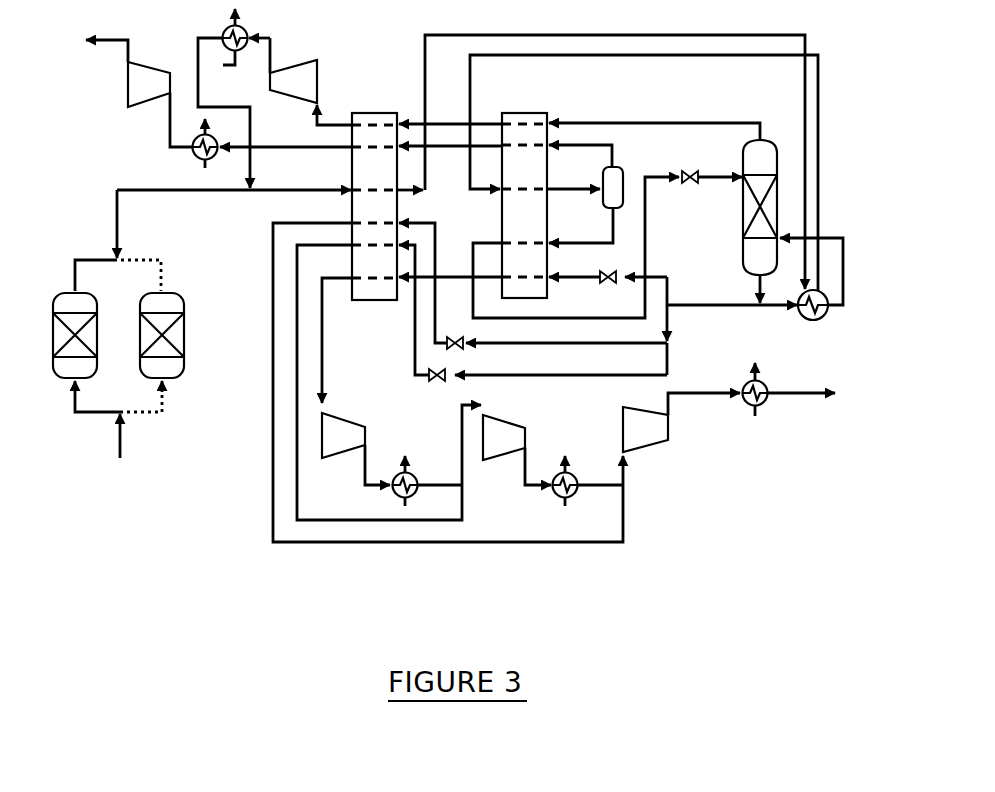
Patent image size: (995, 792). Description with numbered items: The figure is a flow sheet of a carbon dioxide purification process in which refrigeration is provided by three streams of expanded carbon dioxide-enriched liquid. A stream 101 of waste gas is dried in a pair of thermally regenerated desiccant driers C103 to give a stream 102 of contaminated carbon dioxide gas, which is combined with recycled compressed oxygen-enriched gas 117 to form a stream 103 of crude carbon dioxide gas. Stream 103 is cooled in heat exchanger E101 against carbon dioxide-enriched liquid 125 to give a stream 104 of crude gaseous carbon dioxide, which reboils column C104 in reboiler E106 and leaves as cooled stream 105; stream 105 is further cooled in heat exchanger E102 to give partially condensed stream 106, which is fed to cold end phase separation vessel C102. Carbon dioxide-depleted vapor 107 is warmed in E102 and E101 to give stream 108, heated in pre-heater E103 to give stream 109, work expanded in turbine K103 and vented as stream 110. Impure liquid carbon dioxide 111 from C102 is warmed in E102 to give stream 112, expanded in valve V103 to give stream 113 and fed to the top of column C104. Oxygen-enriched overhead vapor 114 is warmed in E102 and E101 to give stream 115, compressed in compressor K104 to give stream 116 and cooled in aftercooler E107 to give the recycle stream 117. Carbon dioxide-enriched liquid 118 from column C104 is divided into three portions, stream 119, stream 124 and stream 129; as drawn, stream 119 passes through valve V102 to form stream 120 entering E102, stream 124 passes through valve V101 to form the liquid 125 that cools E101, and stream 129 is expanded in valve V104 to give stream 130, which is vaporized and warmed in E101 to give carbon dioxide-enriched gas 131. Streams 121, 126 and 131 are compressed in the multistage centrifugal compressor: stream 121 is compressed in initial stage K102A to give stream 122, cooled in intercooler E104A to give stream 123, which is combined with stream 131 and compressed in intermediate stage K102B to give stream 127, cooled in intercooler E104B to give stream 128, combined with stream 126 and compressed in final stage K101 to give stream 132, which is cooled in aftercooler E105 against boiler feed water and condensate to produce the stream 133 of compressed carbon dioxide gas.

The stream of waste gas 101 is at (120, 428).
The stream of contaminated carbon dioxide gas 102 is at (211, 200).
The stream of crude carbon dioxide gas 103 is at (316, 188).
The stream of crude gaseous carbon dioxide 104 is at (495, 34).
The stream of cooled crude carbon dioxide gas 105 is at (526, 60).
The stream of partially condensed crude carbon dioxide gas 106 is at (593, 187).
The stream of carbon dioxide-depleted vapor 107 is at (612, 140).
The stream of carbon dioxide-depleted gas 108 is at (285, 146).
The stream of heated carbon dioxide-depleted gas 109 is at (171, 144).
The stream of expanded carbon dioxide depleted gas 110 is at (117, 38).
The stream of impure carbon dioxide liquid 111 is at (600, 240).
The stream of warmed impure carbon dioxide liquid 112 is at (472, 256).
The stream of expanded impure carbon dioxide liquid 113 is at (713, 173).
The stream of oxygen-enriched overhead vapor 114 is at (656, 122).
The stream of warmed oxygen-enriched gas 115 is at (334, 122).
The stream of compressed oxygen-enriched gas 116 is at (276, 47).
The stream of compressed oxygen-enriched gas 117 is at (212, 38).
The stream of carbon dioxide-enriched liquid 118 is at (745, 308).
The stream of carbon dioxide-enriched liquid 119 is at (676, 287).
The stream from V102 120 is at (593, 274).
The stream of carbon dioxide-enriched gas 121 is at (324, 327).
The stream of compressed carbon dioxide gas 122 is at (362, 459).
The stream of cooled compressed carbon dioxide gas 123 is at (440, 483).
The stream of carbon dioxide-enriched liquid 124 is at (616, 345).
The stream of carbon dioxide-enriched liquid 125 is at (437, 232).
The stream of carbon dioxide-enriched gas 126 is at (270, 258).
The stream of further compressed carbon dioxide gas 127 is at (522, 461).
The stream of further compressed carbon dioxide gas 128 is at (598, 483).
The stream of carbon dioxide-enriched liquid 129 is at (605, 378).
The stream of expanded carbon dioxide-enriched liquid 130 is at (414, 311).
The stream of carbon dioxide-enriched gas 131 is at (297, 287).
The stream of compressed carbon dioxide gas 132 is at (711, 391).
The stream of compressed carbon dioxide gas 133 is at (799, 391).
The cold end phase separation vessel C102 is at (624, 186).
The thermally regenerated desiccant driers C103 is at (185, 371).
The column C104 is at (742, 207).
The heat exchanger E101 is at (374, 195).
The heat exchanger E102 is at (504, 112).
The pre-heater E103 is at (199, 161).
The intercooler E104A is at (398, 499).
The intercooler E104B is at (556, 501).
The aftercooler E105 is at (750, 405).
The reboiler E106 is at (811, 320).
The aftercooler E107 is at (243, 28).
The final compressor stage K101 is at (645, 412).
The initial compressor stage K102A is at (353, 426).
The intermediate compressor stage K102B is at (513, 428).
The turbine K103 is at (152, 68).
The compressor K104 is at (298, 63).
The valve V101 is at (447, 342).
The valve V102 is at (604, 283).
The valve V103 is at (681, 182).
The valve V104 is at (430, 381).